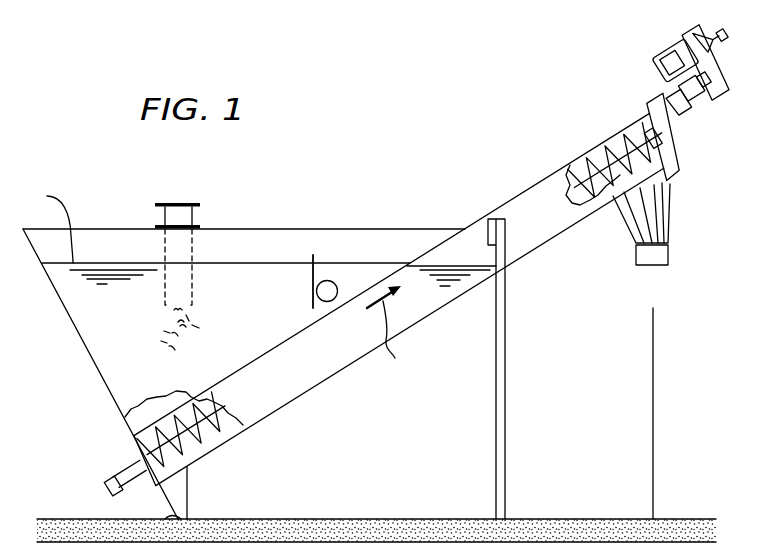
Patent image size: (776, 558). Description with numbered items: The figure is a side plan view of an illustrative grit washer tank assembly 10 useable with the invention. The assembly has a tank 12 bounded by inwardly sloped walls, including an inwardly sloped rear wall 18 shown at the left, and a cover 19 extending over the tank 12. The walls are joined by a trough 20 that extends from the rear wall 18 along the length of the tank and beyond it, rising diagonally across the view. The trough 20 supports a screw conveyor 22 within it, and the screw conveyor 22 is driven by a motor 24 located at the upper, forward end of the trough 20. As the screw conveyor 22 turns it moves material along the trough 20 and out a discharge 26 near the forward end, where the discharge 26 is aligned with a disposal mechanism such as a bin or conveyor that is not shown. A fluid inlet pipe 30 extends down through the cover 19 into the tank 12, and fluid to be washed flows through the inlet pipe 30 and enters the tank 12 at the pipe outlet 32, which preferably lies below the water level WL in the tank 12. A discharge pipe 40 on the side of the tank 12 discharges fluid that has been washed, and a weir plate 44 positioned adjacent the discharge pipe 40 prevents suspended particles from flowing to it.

The grit washer tank assembly 10 is at (413, 188).
The tank 12 is at (333, 223).
The rear wall 18 is at (86, 353).
The cover 19 is at (236, 229).
The trough 20 is at (331, 378).
The screw conveyor 22 is at (214, 443).
The motor 24 is at (702, 96).
The discharge 26 is at (673, 228).
The fluid inlet pipe 30 is at (192, 256).
The pipe outlet 32 is at (165, 306).
The discharge pipe 40 is at (335, 280).
The weir plate 44 is at (312, 275).